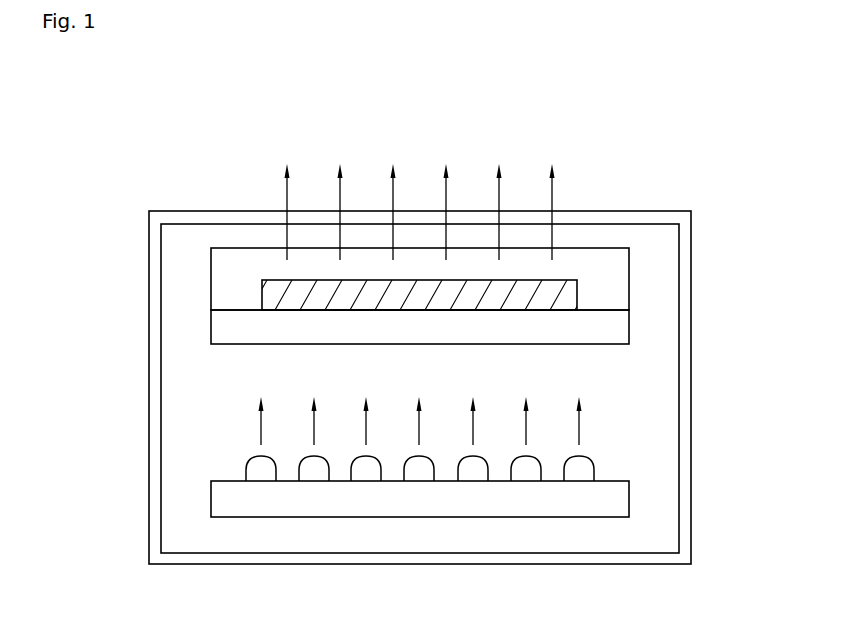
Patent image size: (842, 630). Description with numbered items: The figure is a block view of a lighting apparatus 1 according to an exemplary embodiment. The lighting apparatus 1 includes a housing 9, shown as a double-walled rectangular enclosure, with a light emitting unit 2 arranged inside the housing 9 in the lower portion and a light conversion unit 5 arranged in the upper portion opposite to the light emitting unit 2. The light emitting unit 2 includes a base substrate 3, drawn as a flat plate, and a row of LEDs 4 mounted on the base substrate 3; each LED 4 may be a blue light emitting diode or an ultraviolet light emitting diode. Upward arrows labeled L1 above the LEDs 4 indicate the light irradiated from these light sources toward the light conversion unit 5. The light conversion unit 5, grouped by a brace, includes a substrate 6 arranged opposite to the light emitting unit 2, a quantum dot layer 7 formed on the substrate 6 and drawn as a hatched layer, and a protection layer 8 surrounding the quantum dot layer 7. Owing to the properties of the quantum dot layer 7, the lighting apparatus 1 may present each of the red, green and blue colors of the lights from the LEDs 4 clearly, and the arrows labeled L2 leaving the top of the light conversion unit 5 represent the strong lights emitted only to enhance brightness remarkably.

The lighting apparatus 1 is at (742, 182).
The light emitting unit 2 is at (503, 495).
The base substrate 3 is at (629, 502).
The LED 4 is at (593, 471).
The light conversion unit 5 is at (503, 296).
The substrate 6 is at (629, 325).
The quantum dot layer 7 is at (577, 296).
The protection layer 8 is at (629, 258).
The housing 9 is at (691, 229).
The first light L1 is at (405, 421).
The strong lights L2 is at (433, 212).